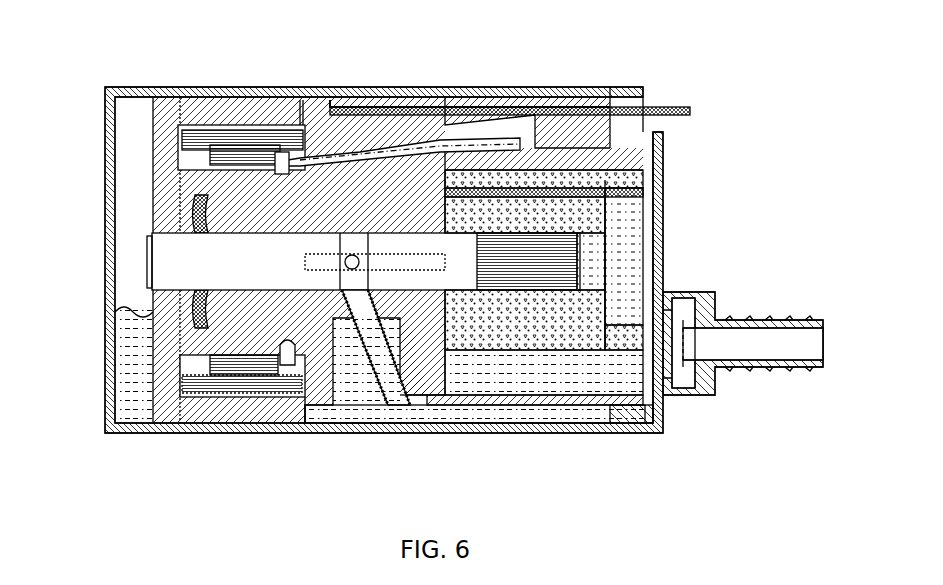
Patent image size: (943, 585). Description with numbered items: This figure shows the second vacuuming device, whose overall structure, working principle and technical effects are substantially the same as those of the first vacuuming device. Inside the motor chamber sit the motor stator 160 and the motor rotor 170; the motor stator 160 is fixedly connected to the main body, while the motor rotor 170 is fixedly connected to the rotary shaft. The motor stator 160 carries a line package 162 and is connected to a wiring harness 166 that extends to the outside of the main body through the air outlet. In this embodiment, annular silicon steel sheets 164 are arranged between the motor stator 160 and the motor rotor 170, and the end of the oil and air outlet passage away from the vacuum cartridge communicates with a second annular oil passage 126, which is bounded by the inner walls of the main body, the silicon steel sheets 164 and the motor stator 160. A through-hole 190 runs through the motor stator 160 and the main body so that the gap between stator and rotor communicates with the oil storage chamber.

The motor stator 160 is at (217, 132).
The motor rotor 170 is at (157, 153).
The second annular oil passage 126 is at (274, 176).
The wiring harness 166 is at (688, 114).
The line package 162 is at (213, 387).
The silicon steel sheet 164 is at (243, 365).
The through-hole 190 is at (322, 413).